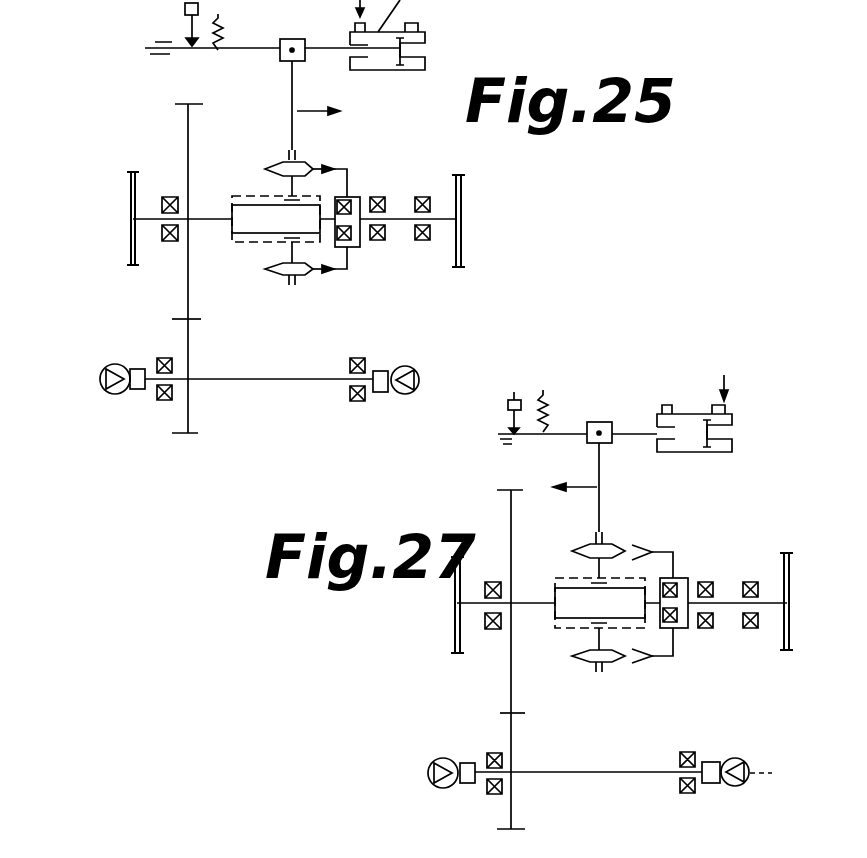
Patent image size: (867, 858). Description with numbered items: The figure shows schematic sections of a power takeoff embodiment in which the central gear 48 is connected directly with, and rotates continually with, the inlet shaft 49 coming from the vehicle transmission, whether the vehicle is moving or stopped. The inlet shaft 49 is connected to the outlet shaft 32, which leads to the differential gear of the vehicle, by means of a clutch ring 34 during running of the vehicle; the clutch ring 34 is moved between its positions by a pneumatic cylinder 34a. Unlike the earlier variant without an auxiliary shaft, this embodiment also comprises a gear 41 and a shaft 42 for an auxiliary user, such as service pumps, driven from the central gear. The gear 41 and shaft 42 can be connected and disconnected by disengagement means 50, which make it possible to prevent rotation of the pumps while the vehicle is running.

In FIG. 25, the outlet shaft 32 is at (462, 222).
In FIG. 27, the outlet shaft 32 is at (790, 604).
In FIG. 25, the clutch ring 34 is at (292, 282).
In FIG. 27, the pneumatic cylinder 34a is at (688, 412).
In FIG. 25, the additional gear 41 is at (190, 348).
In FIG. 27, the additional gear 41 is at (513, 740).
In FIG. 25, the shaft for auxiliary service pumps 42 is at (235, 380).
In FIG. 27, the shaft for auxiliary service pumps 42 is at (567, 777).
In FIG. 25, the central gear 48 is at (187, 258).
In FIG. 27, the central gear 48 is at (510, 665).
In FIG. 25, the inlet shaft 49 is at (128, 225).
In FIG. 27, the inlet shaft 49 is at (455, 607).
In FIG. 25, the disengagement means 50 is at (105, 368).
In FIG. 27, the disengagement means 50 is at (437, 762).